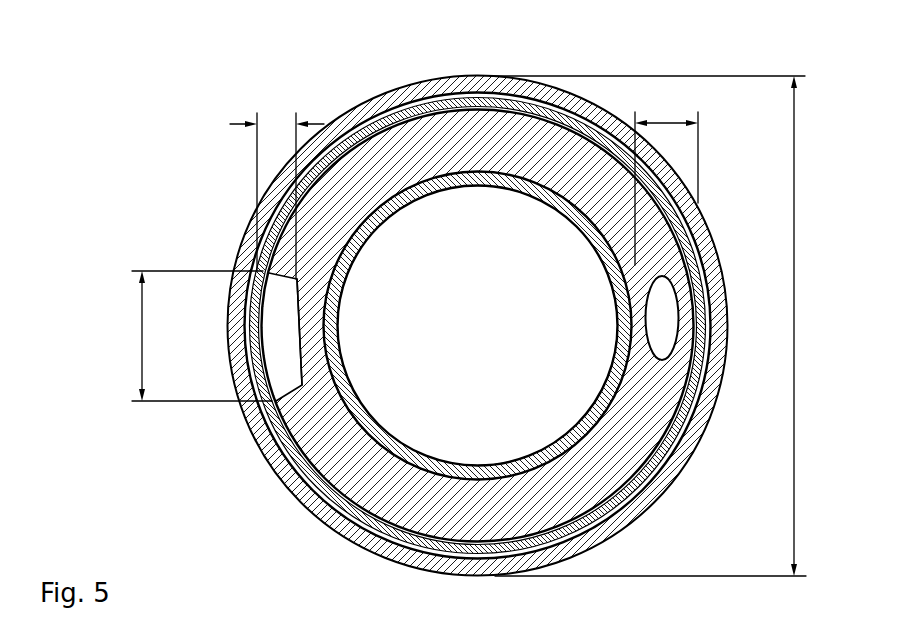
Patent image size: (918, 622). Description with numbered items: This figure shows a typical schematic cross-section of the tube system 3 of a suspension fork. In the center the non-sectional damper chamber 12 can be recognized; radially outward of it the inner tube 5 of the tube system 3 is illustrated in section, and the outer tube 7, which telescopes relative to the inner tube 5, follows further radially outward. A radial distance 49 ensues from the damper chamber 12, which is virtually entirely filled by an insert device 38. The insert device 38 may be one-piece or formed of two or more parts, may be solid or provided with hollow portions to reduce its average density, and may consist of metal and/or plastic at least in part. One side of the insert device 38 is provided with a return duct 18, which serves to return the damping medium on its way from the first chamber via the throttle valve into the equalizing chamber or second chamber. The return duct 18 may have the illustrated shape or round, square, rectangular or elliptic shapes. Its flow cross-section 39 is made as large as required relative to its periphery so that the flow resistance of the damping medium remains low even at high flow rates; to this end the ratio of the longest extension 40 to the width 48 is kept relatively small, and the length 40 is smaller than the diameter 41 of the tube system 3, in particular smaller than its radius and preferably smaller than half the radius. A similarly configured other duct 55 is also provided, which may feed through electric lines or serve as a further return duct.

The tube system 3 is at (353, 97).
The inner tube 5 is at (270, 470).
The outer tube 7 is at (242, 242).
The damper chamber 12 is at (473, 321).
The return duct 18 is at (268, 310).
The insert device 38 is at (642, 503).
The flow cross-section 39 is at (268, 342).
The longest extension 40 is at (140, 335).
The diameter 41 is at (803, 335).
The width 48 is at (278, 118).
The radial distance 49 is at (662, 118).
The other duct 55 is at (692, 302).